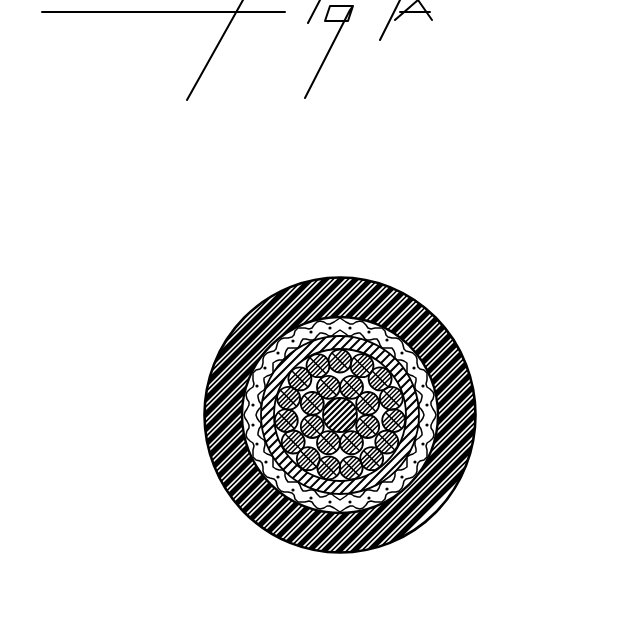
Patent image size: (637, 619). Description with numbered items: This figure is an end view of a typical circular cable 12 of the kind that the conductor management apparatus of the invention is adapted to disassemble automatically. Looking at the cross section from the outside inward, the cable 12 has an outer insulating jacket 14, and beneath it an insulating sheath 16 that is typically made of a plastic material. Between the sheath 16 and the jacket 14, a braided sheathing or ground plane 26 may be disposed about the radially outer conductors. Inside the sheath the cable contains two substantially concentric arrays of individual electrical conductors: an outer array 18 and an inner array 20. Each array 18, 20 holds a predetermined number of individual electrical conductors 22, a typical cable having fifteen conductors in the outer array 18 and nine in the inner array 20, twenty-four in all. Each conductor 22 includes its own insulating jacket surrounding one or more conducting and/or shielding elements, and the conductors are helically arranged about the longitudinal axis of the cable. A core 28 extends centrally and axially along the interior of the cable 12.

The circular cable 12 is at (514, 244).
The outer insulating jacket 14 is at (262, 300).
The insulating sheath 16 is at (427, 400).
The outer array of conductors 18 is at (268, 418).
The inner array of conductors 20 is at (415, 452).
The individual electrical conductor 22 is at (293, 483).
The braided sheathing or ground plane 26 is at (352, 322).
The core 28 is at (347, 487).